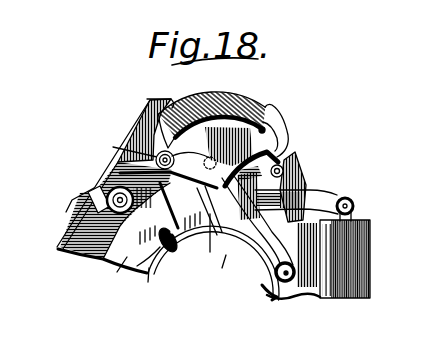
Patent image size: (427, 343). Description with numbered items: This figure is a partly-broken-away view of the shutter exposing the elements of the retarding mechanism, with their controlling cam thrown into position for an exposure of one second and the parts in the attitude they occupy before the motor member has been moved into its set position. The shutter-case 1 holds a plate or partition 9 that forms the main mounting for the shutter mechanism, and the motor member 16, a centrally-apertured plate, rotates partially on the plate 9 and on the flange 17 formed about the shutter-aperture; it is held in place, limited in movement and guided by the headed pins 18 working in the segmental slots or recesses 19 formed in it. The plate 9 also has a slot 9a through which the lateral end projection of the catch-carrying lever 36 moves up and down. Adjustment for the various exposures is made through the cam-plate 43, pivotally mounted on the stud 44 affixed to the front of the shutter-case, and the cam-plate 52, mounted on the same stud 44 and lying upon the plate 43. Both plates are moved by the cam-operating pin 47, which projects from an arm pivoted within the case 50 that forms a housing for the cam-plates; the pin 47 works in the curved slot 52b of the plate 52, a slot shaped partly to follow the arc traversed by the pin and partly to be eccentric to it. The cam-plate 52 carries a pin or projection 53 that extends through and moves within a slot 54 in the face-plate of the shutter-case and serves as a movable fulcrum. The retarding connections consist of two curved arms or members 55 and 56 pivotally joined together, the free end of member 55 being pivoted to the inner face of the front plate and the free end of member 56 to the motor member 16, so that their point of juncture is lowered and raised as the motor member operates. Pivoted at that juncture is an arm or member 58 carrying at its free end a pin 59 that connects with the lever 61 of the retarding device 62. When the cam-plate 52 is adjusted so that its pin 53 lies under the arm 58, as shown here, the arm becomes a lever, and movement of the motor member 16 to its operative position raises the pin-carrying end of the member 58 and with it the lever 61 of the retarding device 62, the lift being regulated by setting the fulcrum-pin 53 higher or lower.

The shutter-case 1 is at (68, 216).
The plate or partition 9 is at (73, 252).
The slot 9a is at (101, 187).
The motor member 16 is at (113, 276).
The flange 17 is at (150, 287).
The headed pins 18 is at (172, 242).
The segmental slots or recesses 19 is at (166, 252).
The catch-carrying lever 36 is at (70, 199).
The cam-plate 43 is at (286, 153).
The stud 44 is at (112, 146).
The cam-operating pin 47 is at (280, 120).
The case 50 is at (153, 120).
The cam-plate 52 is at (229, 146).
The curved slot 52b is at (236, 115).
The pin or projection 53 is at (226, 237).
The slot 54 is at (216, 271).
The swinging member 55 is at (168, 208).
The link member 56 is at (273, 242).
The arm or member 58 is at (300, 183).
The pin 59 is at (243, 212).
The lever 61 is at (339, 197).
The retarding device 62 is at (318, 259).